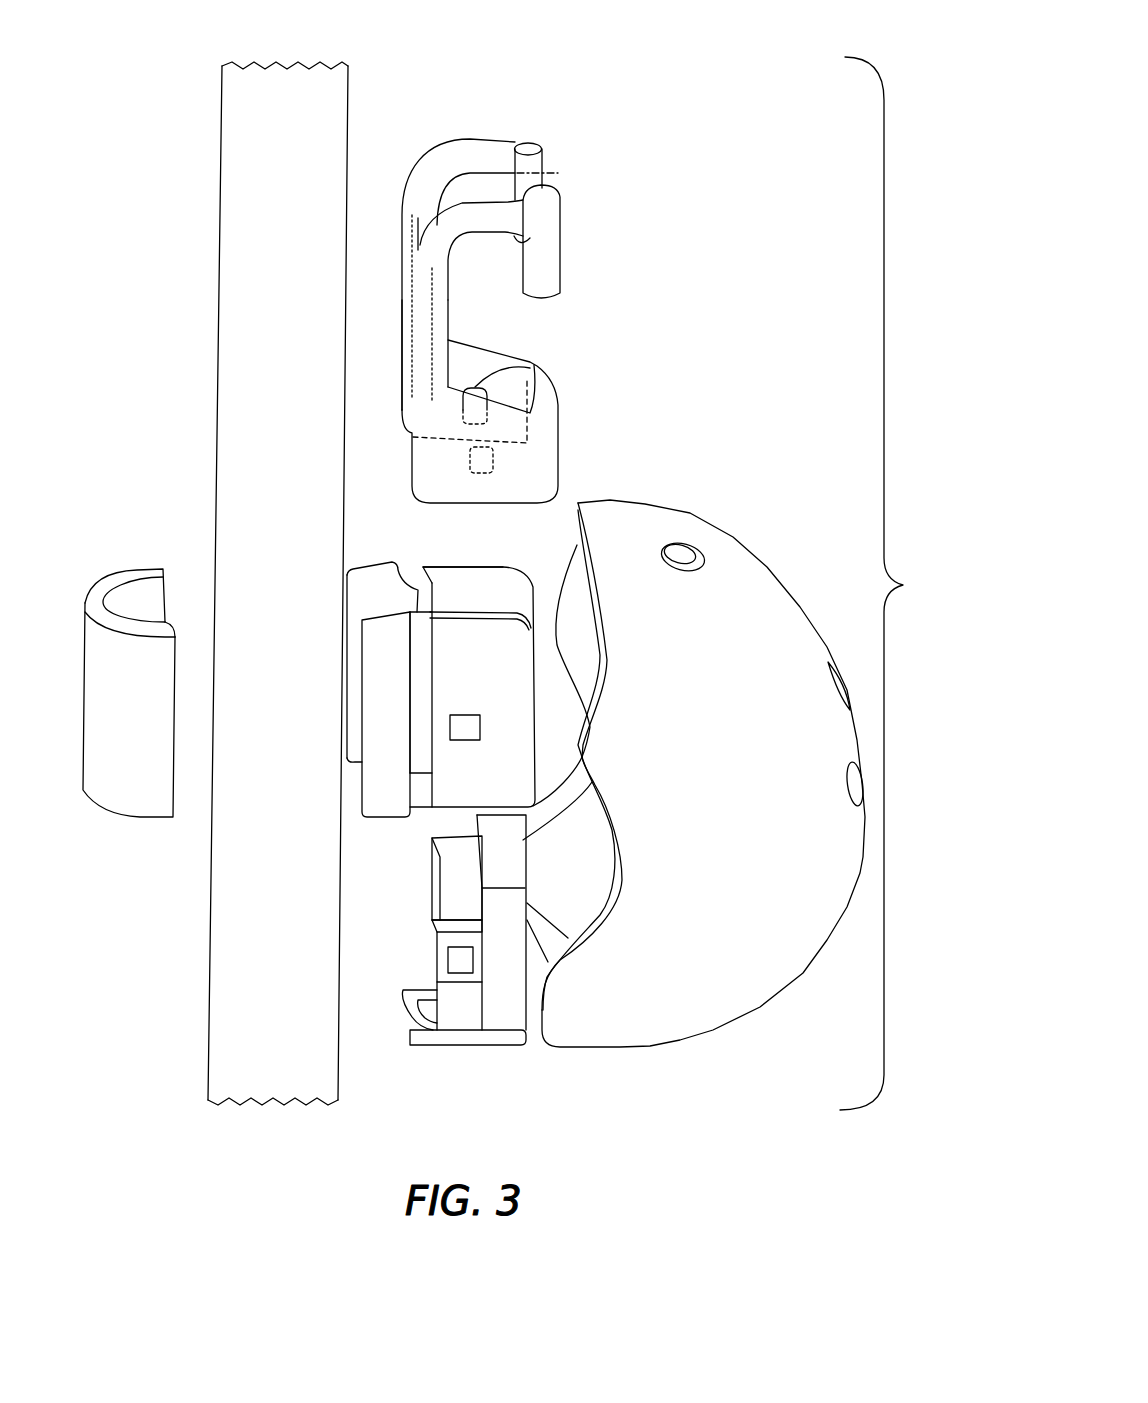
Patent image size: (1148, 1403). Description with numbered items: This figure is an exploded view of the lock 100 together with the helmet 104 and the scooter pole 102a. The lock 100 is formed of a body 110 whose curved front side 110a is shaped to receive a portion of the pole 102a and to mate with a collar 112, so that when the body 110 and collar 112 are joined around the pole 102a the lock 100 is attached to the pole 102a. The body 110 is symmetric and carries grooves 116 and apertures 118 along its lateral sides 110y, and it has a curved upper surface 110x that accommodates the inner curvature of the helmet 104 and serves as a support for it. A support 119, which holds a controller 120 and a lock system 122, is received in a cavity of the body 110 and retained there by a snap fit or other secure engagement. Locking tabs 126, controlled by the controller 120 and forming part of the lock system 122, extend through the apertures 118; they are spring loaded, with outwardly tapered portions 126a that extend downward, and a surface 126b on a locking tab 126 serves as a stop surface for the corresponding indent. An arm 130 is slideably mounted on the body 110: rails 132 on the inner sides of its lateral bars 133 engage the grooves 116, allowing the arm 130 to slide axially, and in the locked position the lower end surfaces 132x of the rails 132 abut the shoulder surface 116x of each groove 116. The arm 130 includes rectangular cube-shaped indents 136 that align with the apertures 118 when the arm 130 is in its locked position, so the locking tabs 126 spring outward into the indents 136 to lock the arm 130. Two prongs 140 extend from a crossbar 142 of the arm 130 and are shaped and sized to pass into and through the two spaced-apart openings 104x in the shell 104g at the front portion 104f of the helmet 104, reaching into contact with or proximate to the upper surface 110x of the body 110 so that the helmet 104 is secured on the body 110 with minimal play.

The lock 100 is at (899, 583).
The pole 102a is at (318, 184).
The helmet 104 is at (718, 796).
The front portion of the helmet 104f is at (650, 543).
The shell of the helmet 104g is at (755, 550).
The openings 104x is at (668, 500).
The body 110 is at (490, 558).
The front side of the body 110a is at (350, 653).
The upper surface of the body 110x is at (545, 567).
The lateral sides of the body 110y is at (437, 562).
The collar 112 is at (108, 565).
The grooves 116 is at (412, 565).
The shoulder surface of the groove 116x is at (420, 720).
The apertures 118 is at (471, 718).
The support 119 is at (500, 1047).
The controller 120 is at (430, 882).
The lock system 122 is at (430, 920).
The locking tabs 126 is at (463, 960).
The tapered portions 126a is at (430, 993).
The surface of the locking tab 126b is at (458, 1017).
The arm 130 is at (408, 143).
The rails 132 is at (412, 218).
The end surfaces of the rails 132x is at (430, 372).
The lateral bars 133 is at (448, 300).
The indents 136 is at (530, 368).
The prongs 140 is at (522, 164).
The crossbar 142 is at (561, 173).